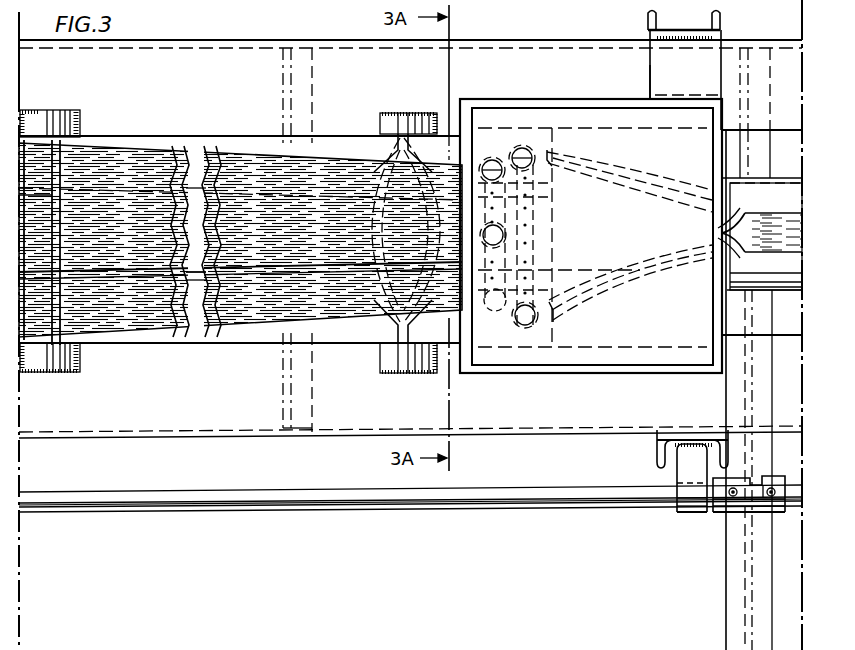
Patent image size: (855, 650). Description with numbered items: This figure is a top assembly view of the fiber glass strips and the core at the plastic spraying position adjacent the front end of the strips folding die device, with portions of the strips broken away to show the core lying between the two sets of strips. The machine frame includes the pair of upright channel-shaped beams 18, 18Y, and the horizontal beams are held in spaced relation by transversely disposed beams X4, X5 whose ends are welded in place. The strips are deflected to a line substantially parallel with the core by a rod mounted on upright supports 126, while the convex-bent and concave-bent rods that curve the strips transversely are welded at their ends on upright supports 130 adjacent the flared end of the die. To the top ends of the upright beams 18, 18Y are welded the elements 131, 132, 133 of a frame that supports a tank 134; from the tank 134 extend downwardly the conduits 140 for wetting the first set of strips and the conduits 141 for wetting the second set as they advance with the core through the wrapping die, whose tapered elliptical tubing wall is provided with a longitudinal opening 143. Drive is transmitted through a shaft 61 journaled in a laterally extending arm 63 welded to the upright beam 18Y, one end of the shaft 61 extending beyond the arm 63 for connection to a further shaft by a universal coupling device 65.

The upright beam 18 is at (648, 21).
The upright beam 18Y is at (659, 448).
The shaft 61 is at (386, 499).
The laterally extending arm 63 is at (691, 500).
The universal coupling device 65 is at (760, 542).
The upright support 126 is at (66, 110).
The upright support 130 is at (380, 116).
The frame element 131 is at (474, 378).
The frame element 132 is at (500, 98).
The frame element 133 is at (652, 66).
The tank 134 is at (546, 110).
The conduit 140 is at (495, 314).
The conduit 141 is at (531, 158).
The longitudinal opening 143 is at (722, 233).
The transversely disposed beam X4 is at (283, 91).
The transversely disposed beam X5 is at (758, 97).